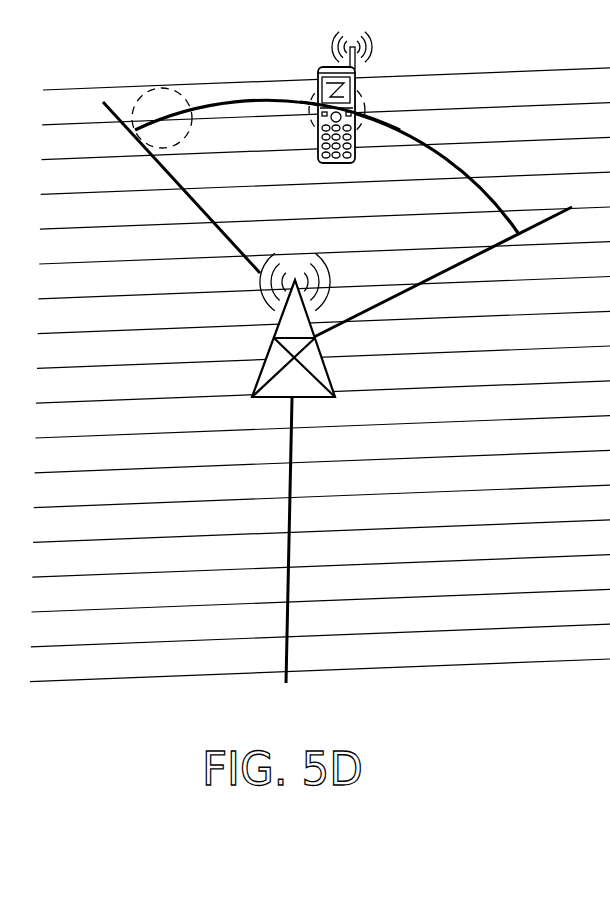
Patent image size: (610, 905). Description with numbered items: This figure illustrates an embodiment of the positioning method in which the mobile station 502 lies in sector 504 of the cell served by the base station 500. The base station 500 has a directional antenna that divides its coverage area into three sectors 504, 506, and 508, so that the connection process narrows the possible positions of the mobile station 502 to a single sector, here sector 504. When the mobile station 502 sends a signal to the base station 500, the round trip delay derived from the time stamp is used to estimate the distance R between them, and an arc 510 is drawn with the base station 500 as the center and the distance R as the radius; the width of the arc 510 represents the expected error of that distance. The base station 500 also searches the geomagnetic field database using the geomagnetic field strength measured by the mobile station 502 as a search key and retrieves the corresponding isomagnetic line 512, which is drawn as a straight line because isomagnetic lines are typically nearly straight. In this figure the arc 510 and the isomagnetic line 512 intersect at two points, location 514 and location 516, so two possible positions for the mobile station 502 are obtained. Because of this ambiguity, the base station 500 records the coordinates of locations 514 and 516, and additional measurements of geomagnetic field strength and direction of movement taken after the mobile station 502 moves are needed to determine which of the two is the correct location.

The base station 500 is at (267, 356).
The mobile station 502 is at (318, 148).
The sector 504 is at (399, 279).
The sector 506 is at (138, 395).
The sector 508 is at (473, 485).
The arc 510 is at (500, 202).
The isomagnetic line 512 is at (460, 114).
The location 514 is at (138, 98).
The location 516 is at (372, 102).